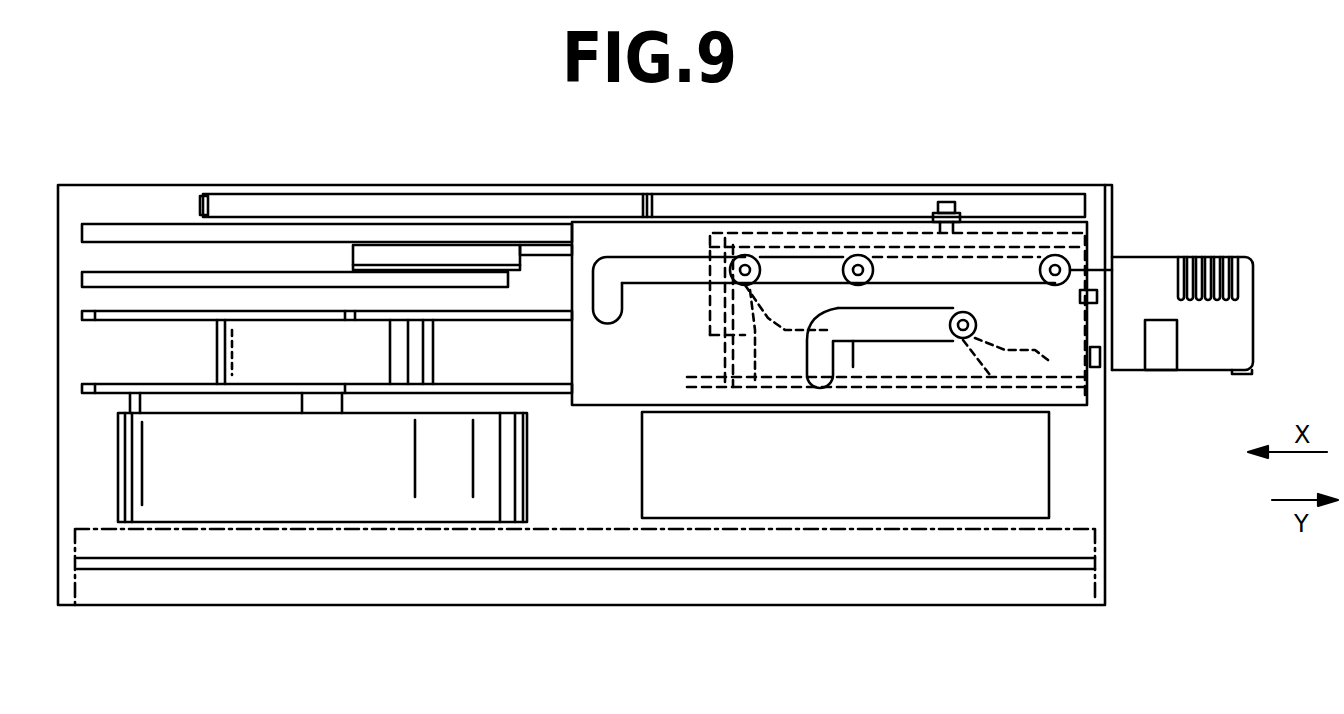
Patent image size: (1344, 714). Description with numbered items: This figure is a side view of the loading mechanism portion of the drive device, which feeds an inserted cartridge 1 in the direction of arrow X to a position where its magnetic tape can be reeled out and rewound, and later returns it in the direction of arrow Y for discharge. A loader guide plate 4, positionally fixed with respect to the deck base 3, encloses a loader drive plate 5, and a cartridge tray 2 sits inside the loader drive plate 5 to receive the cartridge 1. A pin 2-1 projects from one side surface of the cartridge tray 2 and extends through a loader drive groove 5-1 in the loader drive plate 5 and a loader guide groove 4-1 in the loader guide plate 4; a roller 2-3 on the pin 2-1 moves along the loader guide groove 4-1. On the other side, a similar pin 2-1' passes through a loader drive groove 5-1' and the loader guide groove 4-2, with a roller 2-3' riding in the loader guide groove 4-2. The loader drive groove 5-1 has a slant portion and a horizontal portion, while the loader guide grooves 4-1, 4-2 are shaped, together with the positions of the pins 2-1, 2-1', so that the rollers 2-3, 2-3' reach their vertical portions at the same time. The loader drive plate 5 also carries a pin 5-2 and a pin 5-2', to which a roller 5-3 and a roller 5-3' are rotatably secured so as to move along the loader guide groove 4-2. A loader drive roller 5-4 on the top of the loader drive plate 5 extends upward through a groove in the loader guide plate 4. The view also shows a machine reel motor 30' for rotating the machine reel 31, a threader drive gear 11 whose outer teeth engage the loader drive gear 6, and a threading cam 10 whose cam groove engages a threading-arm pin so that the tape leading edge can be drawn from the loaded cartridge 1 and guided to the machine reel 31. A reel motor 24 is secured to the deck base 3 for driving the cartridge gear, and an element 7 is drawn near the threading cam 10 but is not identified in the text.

The cartridge 1 is at (1220, 372).
The cartridge tray 2 is at (1112, 368).
The deck base 3 is at (147, 572).
The loader guide plate 4 is at (692, 233).
The loader guide groove 4-1 is at (880, 327).
The loader guide groove 4-2 is at (620, 257).
The loader drive plate 5 is at (770, 232).
The loader drive groove 5-1 is at (998, 322).
The loader drive groove 5-1' is at (727, 350).
The pin 5-2 is at (1053, 212).
The pin 5-2' is at (801, 214).
The roller 5-3 is at (1126, 258).
The roller 5-3' is at (900, 370).
The loader drive roller 5-4 is at (940, 200).
The loader drive gear 6 is at (690, 200).
The stopper block 7 is at (365, 245).
The threading cam 10 is at (155, 225).
The threader drive gear 11 is at (448, 205).
The reel motor 24 is at (655, 458).
The machine reel motor 30' is at (361, 468).
The machine reel 31 is at (113, 385).
The pin 2-1 is at (954, 399).
The pin 2-1' is at (675, 331).
The roller 2-3 is at (1011, 398).
The roller 2-3' is at (728, 297).